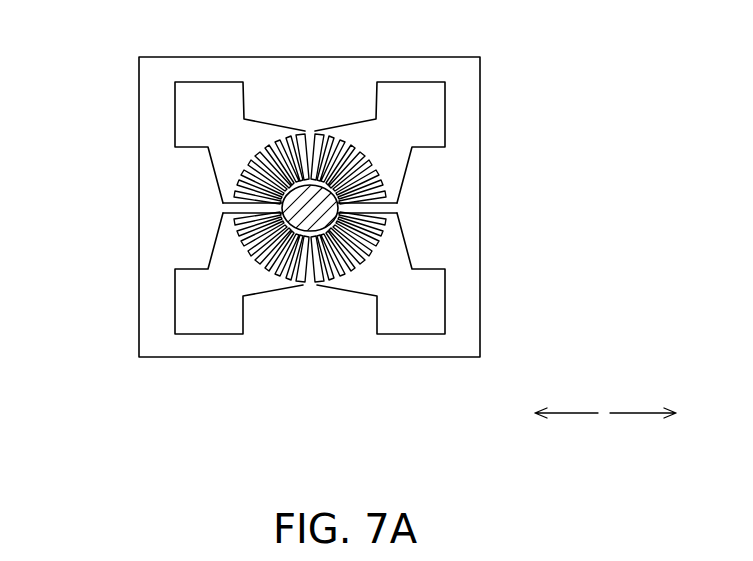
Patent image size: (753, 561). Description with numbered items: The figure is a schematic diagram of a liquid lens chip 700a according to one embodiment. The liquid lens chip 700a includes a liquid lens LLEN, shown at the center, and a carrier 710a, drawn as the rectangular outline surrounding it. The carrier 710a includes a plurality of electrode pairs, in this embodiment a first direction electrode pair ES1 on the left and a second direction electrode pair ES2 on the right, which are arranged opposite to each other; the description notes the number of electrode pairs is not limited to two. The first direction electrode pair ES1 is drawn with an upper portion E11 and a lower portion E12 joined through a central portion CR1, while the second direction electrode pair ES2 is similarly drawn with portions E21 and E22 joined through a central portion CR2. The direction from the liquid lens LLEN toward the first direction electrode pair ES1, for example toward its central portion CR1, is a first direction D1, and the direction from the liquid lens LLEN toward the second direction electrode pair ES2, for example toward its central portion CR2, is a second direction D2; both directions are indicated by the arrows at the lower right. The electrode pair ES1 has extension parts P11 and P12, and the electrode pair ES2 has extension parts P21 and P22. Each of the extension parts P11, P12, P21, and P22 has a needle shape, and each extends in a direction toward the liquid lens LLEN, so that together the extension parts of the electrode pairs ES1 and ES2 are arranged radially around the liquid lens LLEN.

The liquid lens chip 700a is at (597, 488).
The carrier 710a is at (175, 70).
The first direction electrode pair ES1 is at (73, 120).
The second direction electrode pair ES2 is at (546, 120).
The first electrode of first electrode set E11 is at (175, 115).
The second electrode of first electrode set E12 is at (175, 300).
The central portion of the first direction electrode pair CR1 is at (147, 205).
The first electrode of second electrode set E21 is at (445, 115).
The second electrode of second electrode set E22 is at (445, 300).
The central portion of the second direction electrode pair CR2 is at (472, 205).
The extension part P11 is at (302, 143).
The extension part P12 is at (302, 283).
The extension part P21 is at (318, 143).
The extension part P22 is at (318, 283).
The liquid lens LLEN is at (310, 290).
The first direction D1 is at (550, 413).
The second direction D2 is at (660, 413).